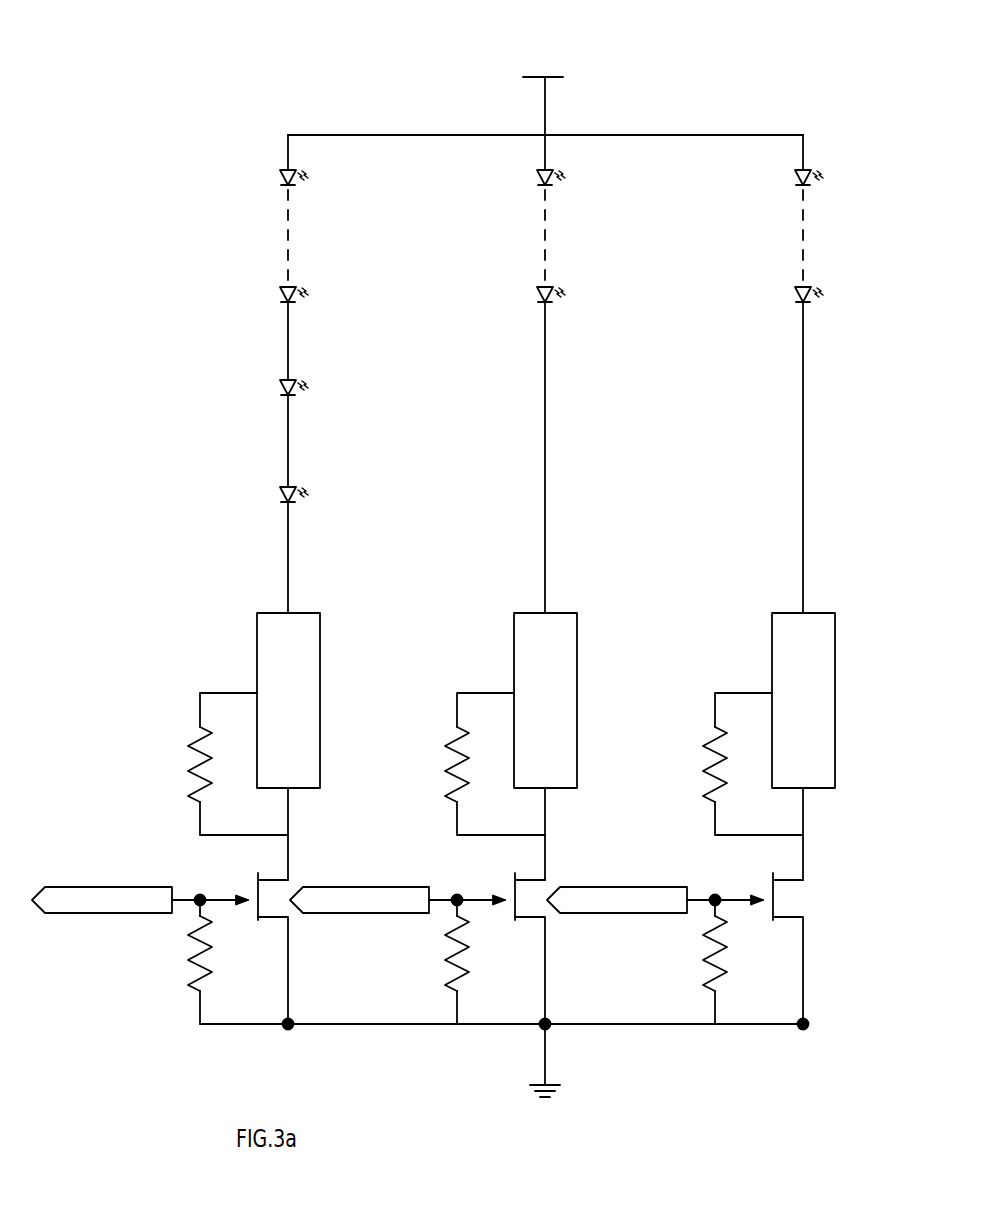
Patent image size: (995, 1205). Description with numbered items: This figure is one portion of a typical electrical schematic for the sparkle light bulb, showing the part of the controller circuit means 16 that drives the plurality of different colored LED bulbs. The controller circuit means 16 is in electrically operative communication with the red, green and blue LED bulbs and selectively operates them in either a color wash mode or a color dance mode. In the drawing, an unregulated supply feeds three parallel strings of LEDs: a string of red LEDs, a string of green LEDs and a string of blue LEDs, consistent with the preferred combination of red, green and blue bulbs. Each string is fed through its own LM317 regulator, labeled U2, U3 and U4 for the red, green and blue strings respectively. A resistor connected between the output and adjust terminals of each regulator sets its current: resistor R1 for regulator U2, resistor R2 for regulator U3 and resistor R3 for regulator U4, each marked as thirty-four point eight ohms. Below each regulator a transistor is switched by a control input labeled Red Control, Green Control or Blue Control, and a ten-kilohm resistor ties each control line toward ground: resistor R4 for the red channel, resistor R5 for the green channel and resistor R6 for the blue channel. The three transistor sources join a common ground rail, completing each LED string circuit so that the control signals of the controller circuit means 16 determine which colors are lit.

The controller circuit means 16 is at (318, 84).
The LM317 voltage regulator (red channel) U2 is at (234, 700).
The LM317 voltage regulator (green channel) U3 is at (491, 700).
The LM317 voltage regulator (blue channel) U4 is at (749, 700).
The 34.8 ohm current-set resistor (red) R1 is at (200, 764).
The 34.8 ohm current-set resistor (green) R2 is at (457, 764).
The 34.8 ohm current-set resistor (blue) R3 is at (715, 764).
The 10K gate resistor (red) R4 is at (162, 964).
The 10K gate resistor (green) R5 is at (419, 964).
The 10K gate resistor (blue) R6 is at (677, 964).